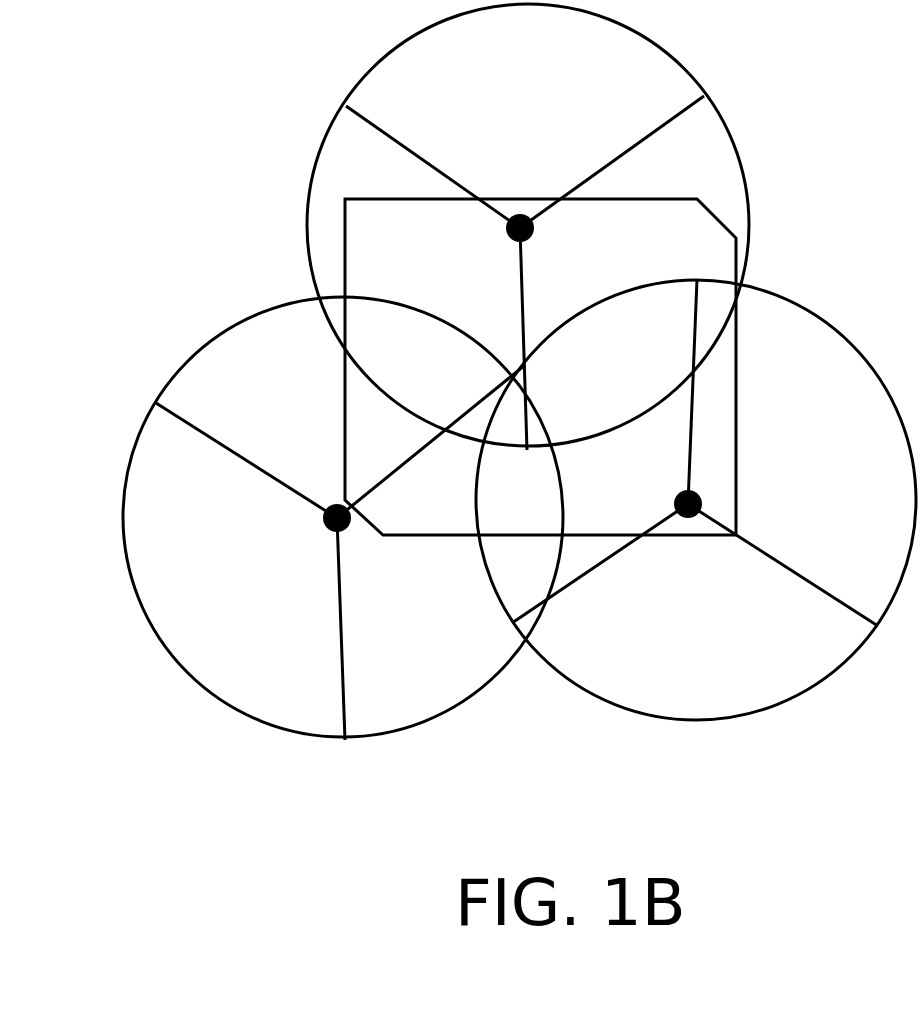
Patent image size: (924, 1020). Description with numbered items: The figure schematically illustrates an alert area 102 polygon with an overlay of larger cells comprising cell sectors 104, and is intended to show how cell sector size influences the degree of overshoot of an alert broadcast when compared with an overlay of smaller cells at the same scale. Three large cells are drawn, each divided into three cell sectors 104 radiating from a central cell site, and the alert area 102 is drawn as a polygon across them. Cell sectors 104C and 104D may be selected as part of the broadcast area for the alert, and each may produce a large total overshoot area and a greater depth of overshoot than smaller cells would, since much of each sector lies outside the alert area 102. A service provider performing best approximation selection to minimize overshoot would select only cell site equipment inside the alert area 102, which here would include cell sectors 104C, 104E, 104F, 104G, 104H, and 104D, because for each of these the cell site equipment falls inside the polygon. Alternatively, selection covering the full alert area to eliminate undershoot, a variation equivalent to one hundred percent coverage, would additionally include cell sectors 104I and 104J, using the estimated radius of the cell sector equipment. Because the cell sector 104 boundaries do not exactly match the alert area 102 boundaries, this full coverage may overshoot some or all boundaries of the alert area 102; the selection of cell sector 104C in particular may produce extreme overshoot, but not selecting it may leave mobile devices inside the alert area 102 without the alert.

The alert area polygon 102 is at (343, 198).
The cell sector 104 is at (228, 580).
The cell sector 104C is at (547, 106).
The cell sector 104D is at (715, 635).
The cell sector 104E is at (433, 253).
The cell sector 104F is at (637, 251).
The cell sector 104G is at (830, 515).
The cell sector 104H is at (641, 493).
The cell sector 104I is at (324, 438).
The cell sector 104J is at (414, 598).